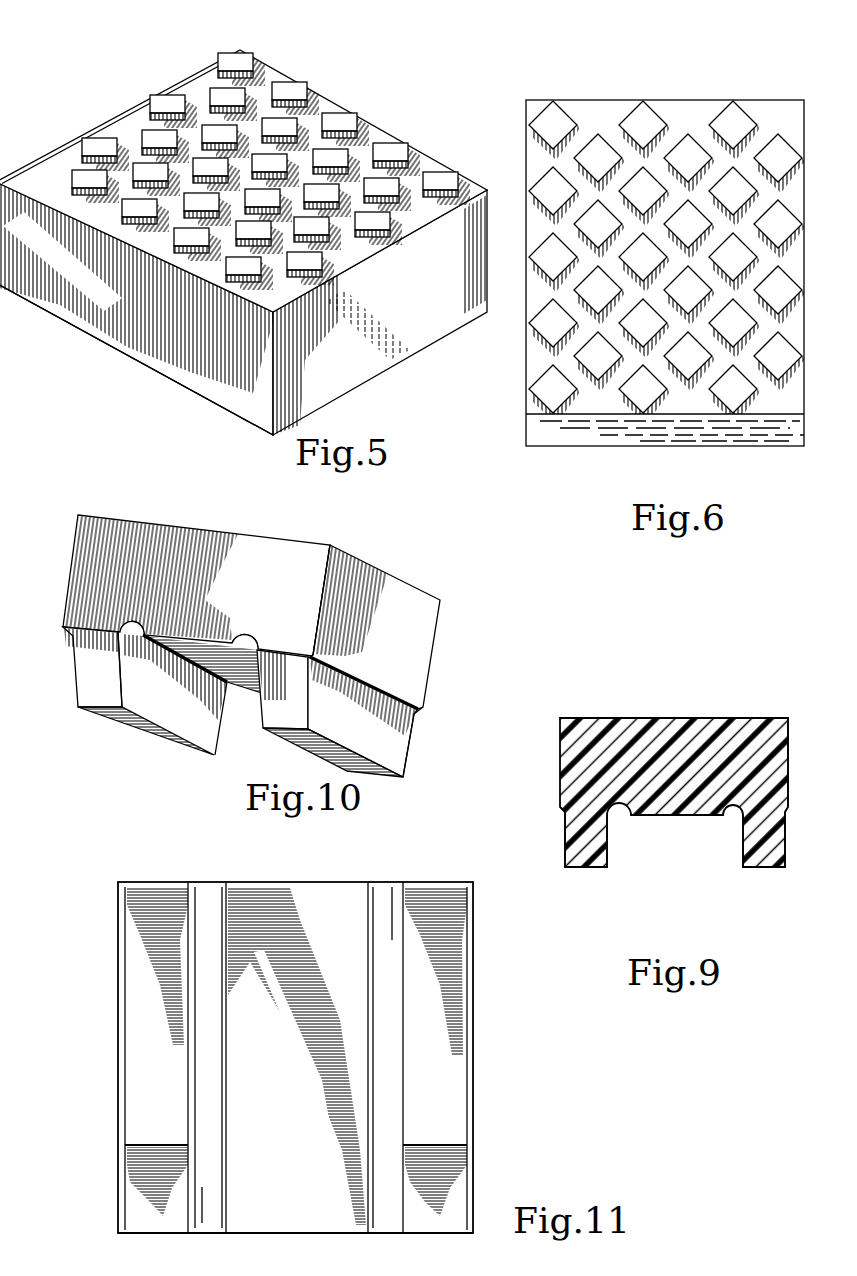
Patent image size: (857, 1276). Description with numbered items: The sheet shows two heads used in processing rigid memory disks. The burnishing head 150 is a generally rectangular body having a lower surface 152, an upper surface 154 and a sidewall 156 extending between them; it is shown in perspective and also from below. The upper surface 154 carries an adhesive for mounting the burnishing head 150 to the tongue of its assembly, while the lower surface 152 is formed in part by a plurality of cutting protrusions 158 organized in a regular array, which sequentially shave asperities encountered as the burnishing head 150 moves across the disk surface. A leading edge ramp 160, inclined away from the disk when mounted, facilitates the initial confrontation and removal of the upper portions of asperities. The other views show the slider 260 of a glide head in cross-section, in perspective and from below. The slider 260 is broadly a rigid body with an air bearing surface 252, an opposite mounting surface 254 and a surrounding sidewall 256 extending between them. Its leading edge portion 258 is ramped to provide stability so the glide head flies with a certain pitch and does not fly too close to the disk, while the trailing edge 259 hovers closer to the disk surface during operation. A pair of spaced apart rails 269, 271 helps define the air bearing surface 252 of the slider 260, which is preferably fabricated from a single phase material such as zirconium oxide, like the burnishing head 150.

In FIG. 5, the burnishing head 150 is at (244, 240).
In FIG. 6, the burnishing head 150 is at (626, 253).
In FIG. 5, the lower surface 152 is at (243, 174).
In FIG. 6, the lower surface 152 is at (535, 362).
In FIG. 5, the upper surface 154 is at (215, 407).
In FIG. 5, the sidewall 156 is at (155, 307).
In FIG. 5, the cutting protrusions 158 is at (333, 122).
In FIG. 6, the cutting protrusions 158 is at (685, 360).
In FIG. 5, the leading edge ramp 160 is at (143, 110).
In FIG. 6, the leading edge ramp 160 is at (698, 435).
In FIG. 10, the air bearing surface 252 is at (232, 663).
In FIG. 11, the air bearing surface 252 is at (272, 1166).
In FIG. 10, the mounting surface 254 is at (248, 536).
In FIG. 9, the mounting surface 254 is at (677, 718).
In FIG. 10, the sidewall 256 is at (388, 602).
In FIG. 9, the sidewall 256 is at (790, 747).
In FIG. 10, the leading edge portion 258 is at (88, 676).
In FIG. 11, the leading edge portion 258 is at (162, 1235).
In FIG. 11, the trailing edge 259 is at (327, 882).
In FIG. 10, the slider 260 is at (287, 645).
In FIG. 9, the slider 260 is at (658, 780).
In FIG. 11, the slider 260 is at (242, 1051).
In FIG. 10, the rail 269 is at (119, 691).
In FIG. 9, the rail 269 is at (767, 868).
In FIG. 11, the rail 269 is at (418, 1103).
In FIG. 10, the rail 271 is at (363, 730).
In FIG. 9, the rail 271 is at (583, 850).
In FIG. 11, the rail 271 is at (170, 1103).